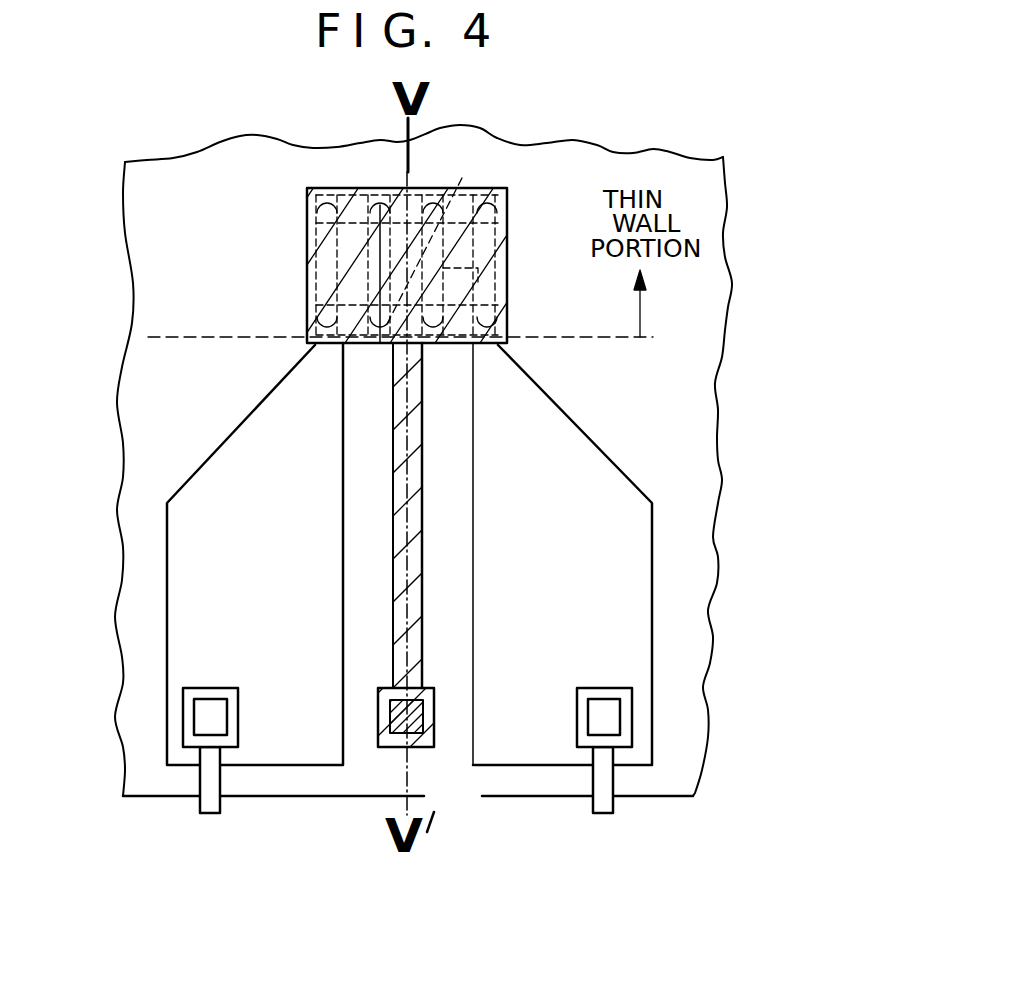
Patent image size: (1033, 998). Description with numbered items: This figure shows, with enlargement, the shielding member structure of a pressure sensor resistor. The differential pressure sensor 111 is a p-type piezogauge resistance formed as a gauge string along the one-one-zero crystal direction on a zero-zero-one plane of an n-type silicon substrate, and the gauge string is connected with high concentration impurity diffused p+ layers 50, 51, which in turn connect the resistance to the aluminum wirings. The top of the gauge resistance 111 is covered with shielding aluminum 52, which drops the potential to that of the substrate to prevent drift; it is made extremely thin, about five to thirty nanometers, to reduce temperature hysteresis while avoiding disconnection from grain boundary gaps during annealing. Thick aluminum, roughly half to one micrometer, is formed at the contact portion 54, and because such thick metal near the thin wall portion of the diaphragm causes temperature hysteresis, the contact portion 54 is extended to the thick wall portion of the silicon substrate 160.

The p+ layer 50 is at (572, 440).
The p+ layer 51 is at (386, 187).
The shielding aluminum 52 is at (309, 261).
The contact portion 54 is at (434, 738).
The differential pressure sensor 111 is at (505, 280).
The substrate 160 is at (650, 798).